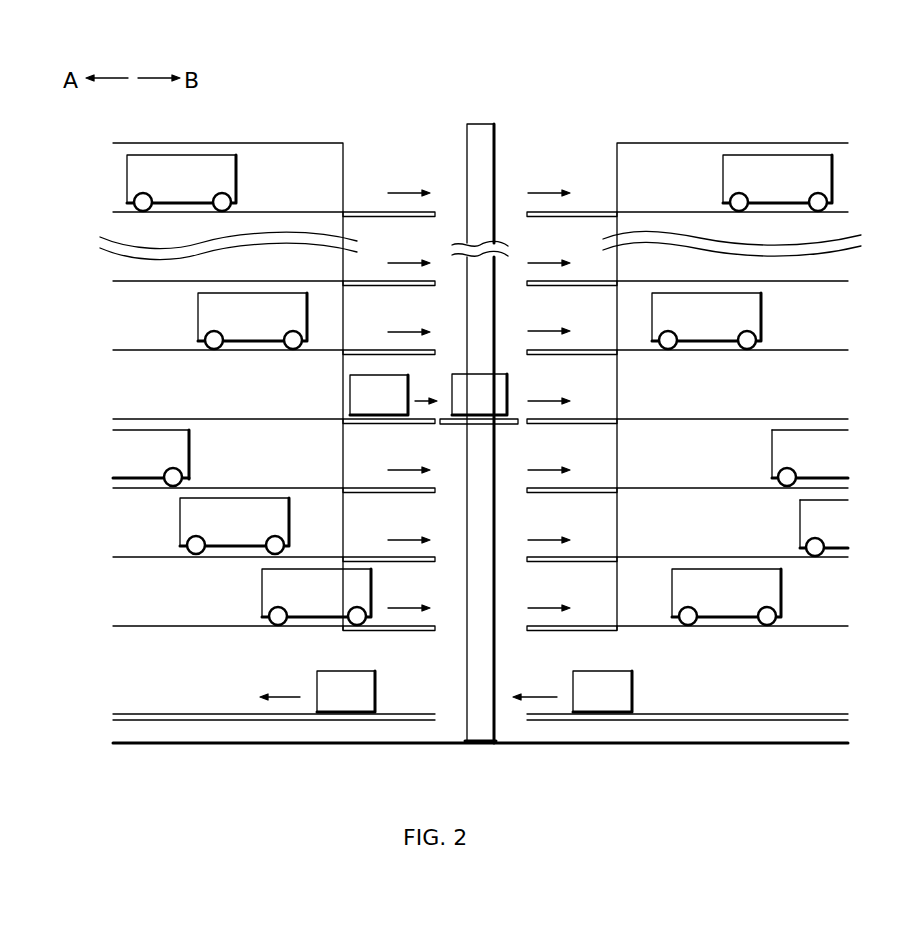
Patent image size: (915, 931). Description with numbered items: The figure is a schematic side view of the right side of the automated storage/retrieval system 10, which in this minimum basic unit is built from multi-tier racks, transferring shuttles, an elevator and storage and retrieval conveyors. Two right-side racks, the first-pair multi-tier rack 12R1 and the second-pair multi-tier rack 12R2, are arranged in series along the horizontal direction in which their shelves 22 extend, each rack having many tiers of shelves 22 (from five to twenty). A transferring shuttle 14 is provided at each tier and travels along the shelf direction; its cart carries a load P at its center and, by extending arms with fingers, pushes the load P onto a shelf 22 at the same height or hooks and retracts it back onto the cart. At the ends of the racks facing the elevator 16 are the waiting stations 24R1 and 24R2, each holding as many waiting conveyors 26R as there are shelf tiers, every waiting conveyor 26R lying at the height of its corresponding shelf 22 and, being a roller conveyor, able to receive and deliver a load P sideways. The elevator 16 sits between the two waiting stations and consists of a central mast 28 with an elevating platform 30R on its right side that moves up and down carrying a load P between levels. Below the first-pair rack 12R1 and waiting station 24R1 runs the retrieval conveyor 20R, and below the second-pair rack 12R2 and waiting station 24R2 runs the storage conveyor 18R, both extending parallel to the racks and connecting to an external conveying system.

The automated storage/retrieval system 10 is at (462, 84).
The right multi-tier rack of the first pair 12R1 is at (325, 138).
The right multi-tier rack of the second pair 12R2 is at (748, 136).
The transferring shuttle 14 is at (200, 163).
The elevator 16 is at (506, 161).
The storage conveyor 18R is at (582, 721).
The retrieval conveyor 20R is at (212, 722).
The shelf 22 is at (697, 212).
The right waiting station of the first pair 24R1 is at (388, 160).
The right waiting station of the second pair 24R2 is at (570, 137).
The waiting conveyor 26R is at (580, 211).
The mast 28 is at (487, 187).
The elevating platform 30R is at (478, 426).
The load P is at (367, 397).